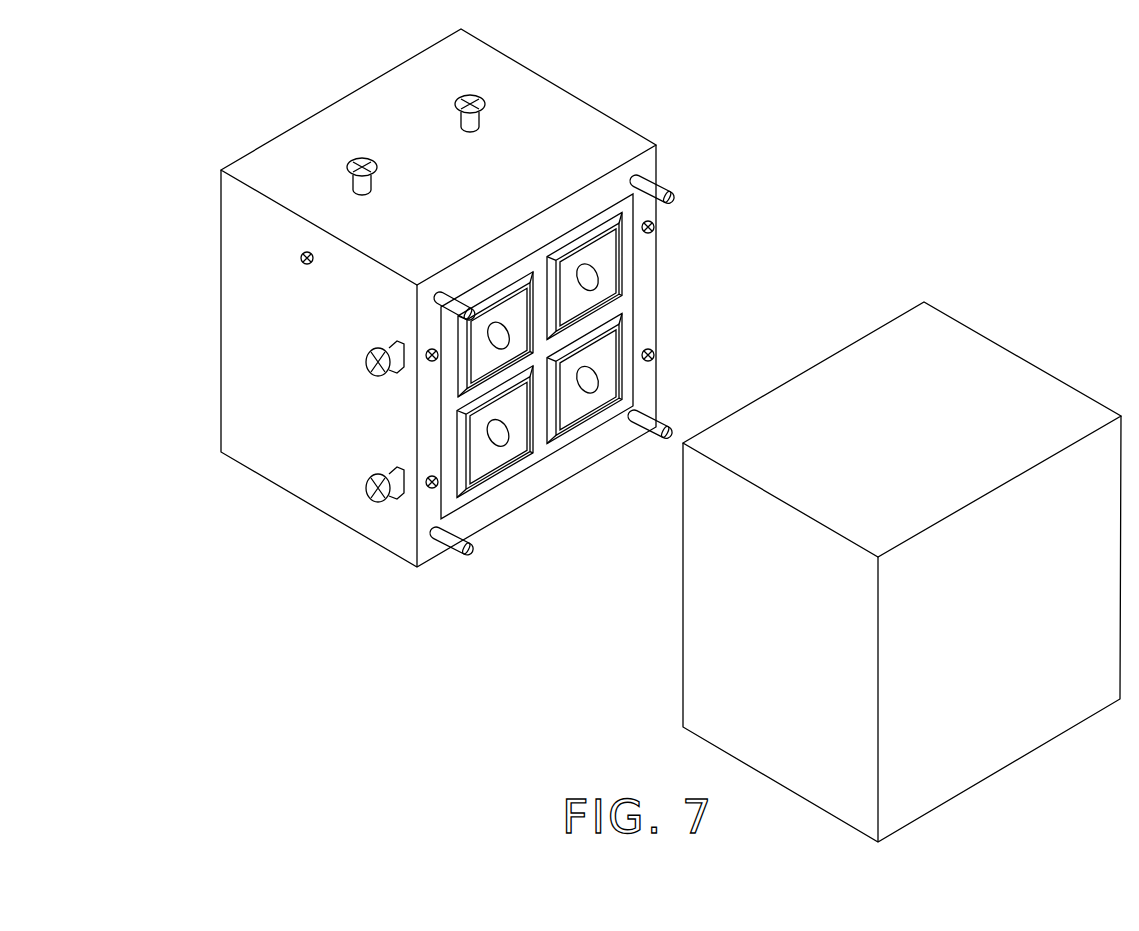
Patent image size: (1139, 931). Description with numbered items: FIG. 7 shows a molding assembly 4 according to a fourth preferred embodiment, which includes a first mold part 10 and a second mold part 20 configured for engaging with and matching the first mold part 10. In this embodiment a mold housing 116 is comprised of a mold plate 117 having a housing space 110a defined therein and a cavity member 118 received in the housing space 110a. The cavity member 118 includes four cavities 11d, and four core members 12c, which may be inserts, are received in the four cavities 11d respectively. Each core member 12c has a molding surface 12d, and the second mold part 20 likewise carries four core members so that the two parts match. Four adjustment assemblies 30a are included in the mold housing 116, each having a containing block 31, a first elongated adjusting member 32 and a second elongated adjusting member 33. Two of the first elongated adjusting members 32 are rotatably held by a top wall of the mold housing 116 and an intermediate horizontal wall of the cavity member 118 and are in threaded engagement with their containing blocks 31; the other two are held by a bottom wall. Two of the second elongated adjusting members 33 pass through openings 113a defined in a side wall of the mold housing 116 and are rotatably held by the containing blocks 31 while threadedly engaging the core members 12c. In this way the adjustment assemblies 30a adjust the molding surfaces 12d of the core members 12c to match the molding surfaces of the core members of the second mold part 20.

The molding assembly 4 is at (934, 60).
The first mold part 10 is at (655, 116).
The second mold part 20 is at (993, 320).
The adjustment assembly 30a is at (141, 245).
The containing block 31 is at (462, 358).
The first elongated adjusting member 32 is at (355, 183).
The second elongated adjusting member 33 is at (367, 355).
The opening 113a is at (400, 495).
The housing space 110a is at (485, 497).
The cavity 11d is at (622, 303).
The core member 12c is at (605, 380).
The molding surface 12d is at (600, 370).
The mold housing 116 is at (637, 512).
The mold plate 117 is at (510, 502).
The cavity member 118 is at (538, 450).